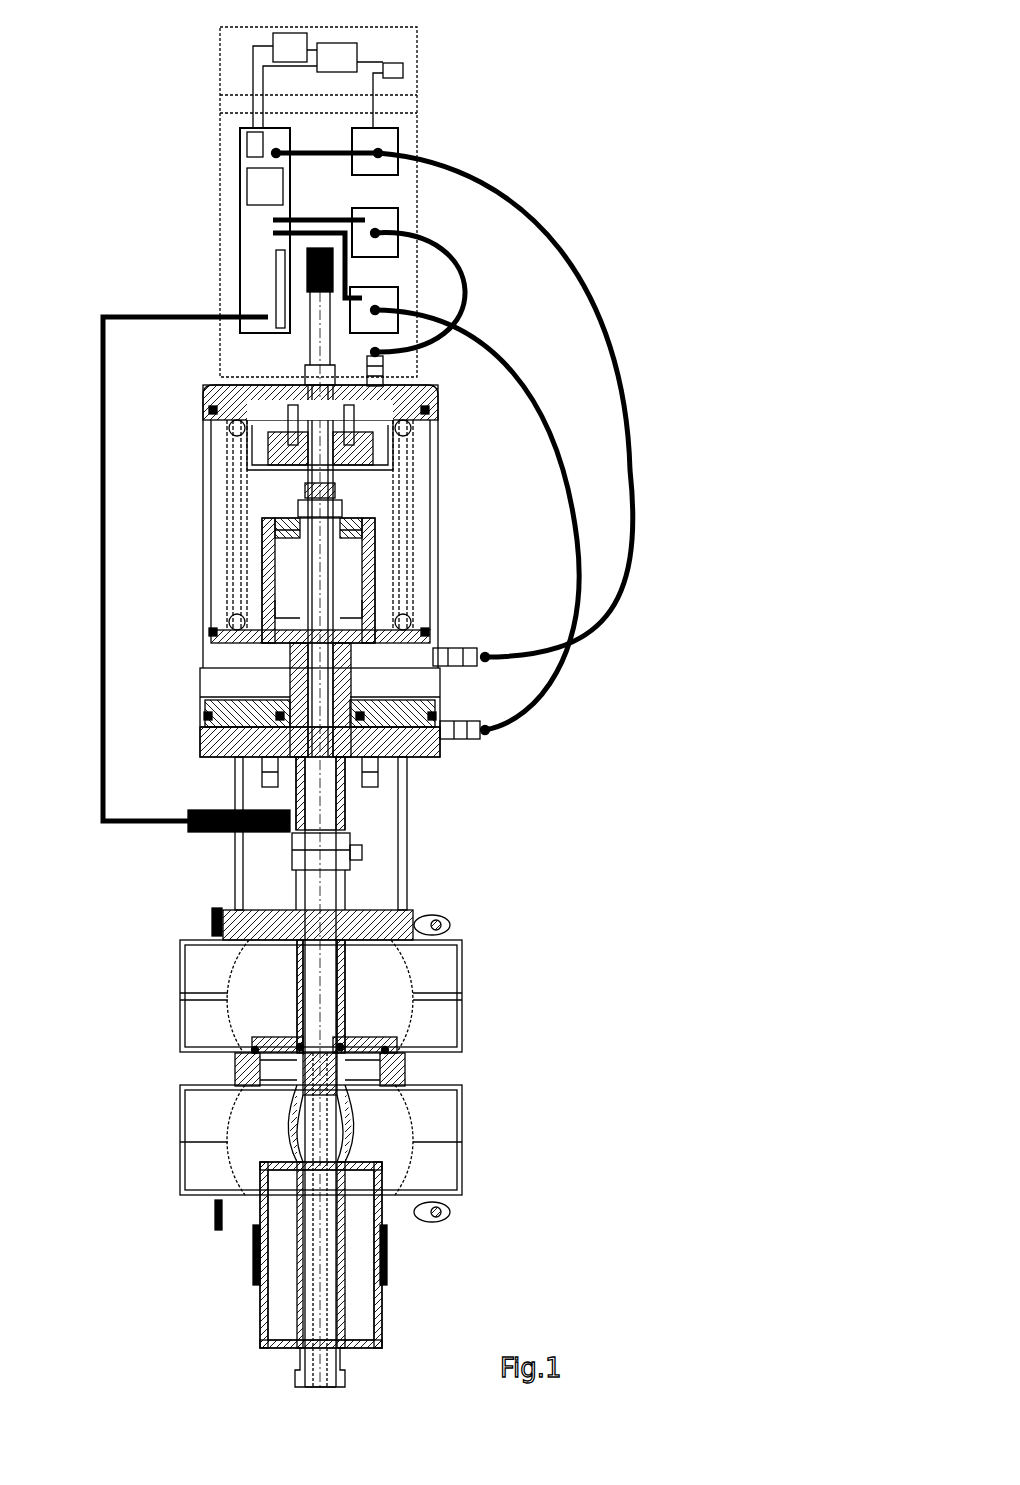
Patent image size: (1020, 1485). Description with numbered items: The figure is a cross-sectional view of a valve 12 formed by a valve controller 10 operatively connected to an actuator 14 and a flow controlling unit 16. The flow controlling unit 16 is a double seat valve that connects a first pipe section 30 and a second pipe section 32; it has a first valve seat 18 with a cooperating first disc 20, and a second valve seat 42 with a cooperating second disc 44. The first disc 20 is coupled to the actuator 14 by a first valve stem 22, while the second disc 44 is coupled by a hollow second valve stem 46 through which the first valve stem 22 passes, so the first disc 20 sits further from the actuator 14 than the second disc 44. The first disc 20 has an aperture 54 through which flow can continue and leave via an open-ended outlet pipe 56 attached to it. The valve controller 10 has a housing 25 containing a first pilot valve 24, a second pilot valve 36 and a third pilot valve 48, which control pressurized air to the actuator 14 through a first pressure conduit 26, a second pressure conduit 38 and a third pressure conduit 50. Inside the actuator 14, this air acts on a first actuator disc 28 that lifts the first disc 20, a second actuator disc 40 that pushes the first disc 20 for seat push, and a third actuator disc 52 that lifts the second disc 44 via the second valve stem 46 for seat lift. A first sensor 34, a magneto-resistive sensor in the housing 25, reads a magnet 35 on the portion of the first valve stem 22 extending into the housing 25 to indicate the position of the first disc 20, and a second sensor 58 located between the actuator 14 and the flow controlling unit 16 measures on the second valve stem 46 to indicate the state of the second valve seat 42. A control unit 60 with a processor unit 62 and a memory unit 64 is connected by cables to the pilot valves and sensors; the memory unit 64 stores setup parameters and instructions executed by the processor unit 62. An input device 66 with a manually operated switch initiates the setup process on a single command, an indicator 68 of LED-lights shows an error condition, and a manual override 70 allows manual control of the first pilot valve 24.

The valve controller 10 is at (210, 100).
The valve 12 is at (450, 828).
The actuator 14 is at (200, 472).
The flow controlling unit 16 is at (415, 1070).
The first valve seat 18 is at (260, 1083).
The first disc 20 is at (283, 1100).
The first valve stem 22 is at (315, 338).
The first pilot valve 24 is at (398, 128).
The housing 25 is at (417, 143).
The first pressure conduit 26 is at (572, 256).
The first actuator disc 28 is at (245, 645).
The first pipe section 30 is at (462, 968).
The second pipe section 32 is at (462, 1166).
The first sensor 34 is at (276, 272).
The magnet 35 is at (307, 285).
The second pilot valve 36 is at (398, 218).
The second pressure conduit 38 is at (468, 287).
The second actuator disc 40 is at (262, 402).
The second valve seat 42 is at (250, 1054).
The second disc 44 is at (265, 1042).
The second valve stem 46 is at (345, 663).
The third pilot valve 48 is at (398, 297).
The third pressure conduit 50 is at (520, 375).
The third actuator disc 52 is at (240, 730).
The aperture 54 is at (305, 1132).
The open-ended outlet pipe 56 is at (313, 1258).
The second sensor 58 is at (222, 834).
The control unit 60 is at (240, 237).
The processor unit 62 is at (247, 148).
The memory unit 64 is at (247, 188).
The input device 66 is at (290, 33).
The indicator 68 is at (357, 48).
The manual override 70 is at (405, 70).